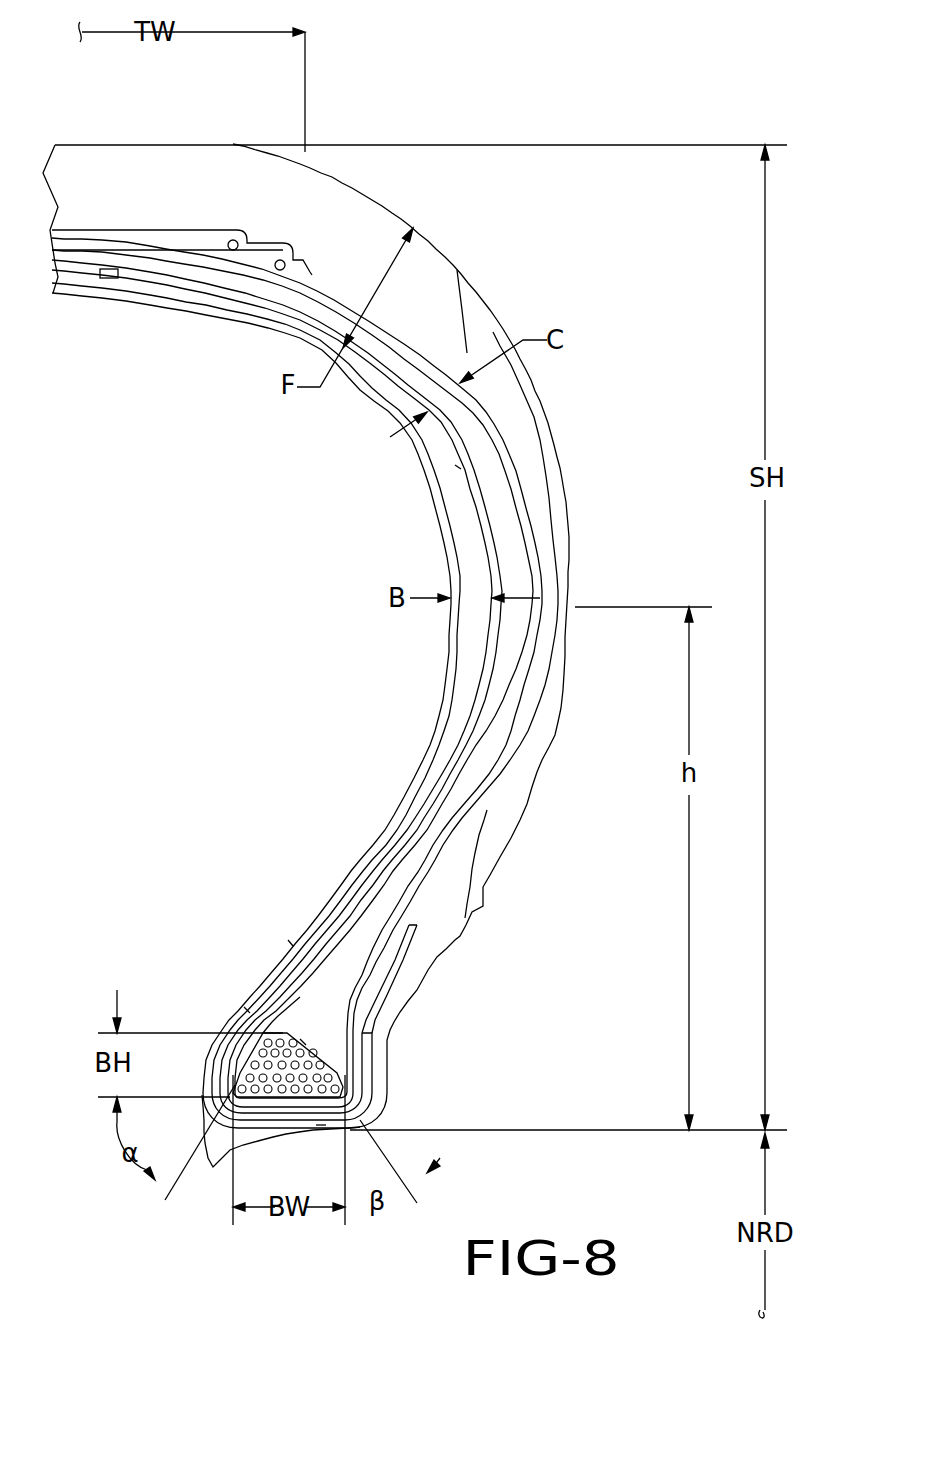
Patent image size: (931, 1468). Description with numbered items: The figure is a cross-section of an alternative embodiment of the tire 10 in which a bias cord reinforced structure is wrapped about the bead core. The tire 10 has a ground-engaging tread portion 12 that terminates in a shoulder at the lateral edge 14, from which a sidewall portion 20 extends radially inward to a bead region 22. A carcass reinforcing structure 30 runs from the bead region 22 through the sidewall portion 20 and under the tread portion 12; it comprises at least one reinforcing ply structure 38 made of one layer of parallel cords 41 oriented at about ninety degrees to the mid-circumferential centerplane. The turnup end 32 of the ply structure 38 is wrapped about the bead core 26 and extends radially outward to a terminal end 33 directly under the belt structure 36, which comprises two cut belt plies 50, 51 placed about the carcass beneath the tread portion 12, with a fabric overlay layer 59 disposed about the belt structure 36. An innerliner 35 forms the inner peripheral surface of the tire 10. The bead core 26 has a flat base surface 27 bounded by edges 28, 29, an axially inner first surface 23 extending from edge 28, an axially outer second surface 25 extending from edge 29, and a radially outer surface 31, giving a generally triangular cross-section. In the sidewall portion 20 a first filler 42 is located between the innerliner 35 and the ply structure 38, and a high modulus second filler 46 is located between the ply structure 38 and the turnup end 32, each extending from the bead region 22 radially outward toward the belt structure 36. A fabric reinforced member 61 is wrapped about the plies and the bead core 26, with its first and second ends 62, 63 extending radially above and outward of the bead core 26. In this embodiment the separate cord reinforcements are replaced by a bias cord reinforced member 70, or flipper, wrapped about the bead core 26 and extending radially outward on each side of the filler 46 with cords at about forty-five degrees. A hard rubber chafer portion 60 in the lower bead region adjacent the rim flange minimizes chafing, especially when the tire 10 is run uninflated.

The tire 10 is at (350, 110).
The tread portion 12 is at (78, 145).
The lateral edge of the tread 14 is at (325, 160).
The sidewall portion 20 is at (565, 553).
The bead region 22 is at (300, 997).
The axially inner first surface 23 is at (230, 1068).
The axially outer second surface 25 is at (343, 1075).
The bead core 26 is at (280, 1065).
The flat base surface 27 is at (320, 1100).
The edge of the flat base surface 28 is at (248, 1100).
The edge of the flat base surface 29 is at (362, 1108).
The carcass reinforcing structure 30 is at (60, 297).
The radially outer surface 31 is at (303, 1042).
The turnup end 32 is at (502, 452).
The terminal end 33 is at (110, 278).
The innerliner 35 is at (330, 903).
The belt structure 36 is at (67, 230).
The reinforcing ply structure 38 is at (458, 467).
The cords 41 is at (487, 537).
The first filler 42 is at (471, 567).
The second filler 46 is at (510, 513).
The belt ply 50 is at (213, 245).
The belt ply 51 is at (213, 262).
The fabric overlay layer 59 is at (140, 233).
The chafer portion 60 is at (427, 973).
The fabric reinforced member 61 is at (247, 1010).
The first end 62 is at (290, 943).
The second end 63 is at (372, 1040).
The bias cord reinforced member 70 is at (407, 930).